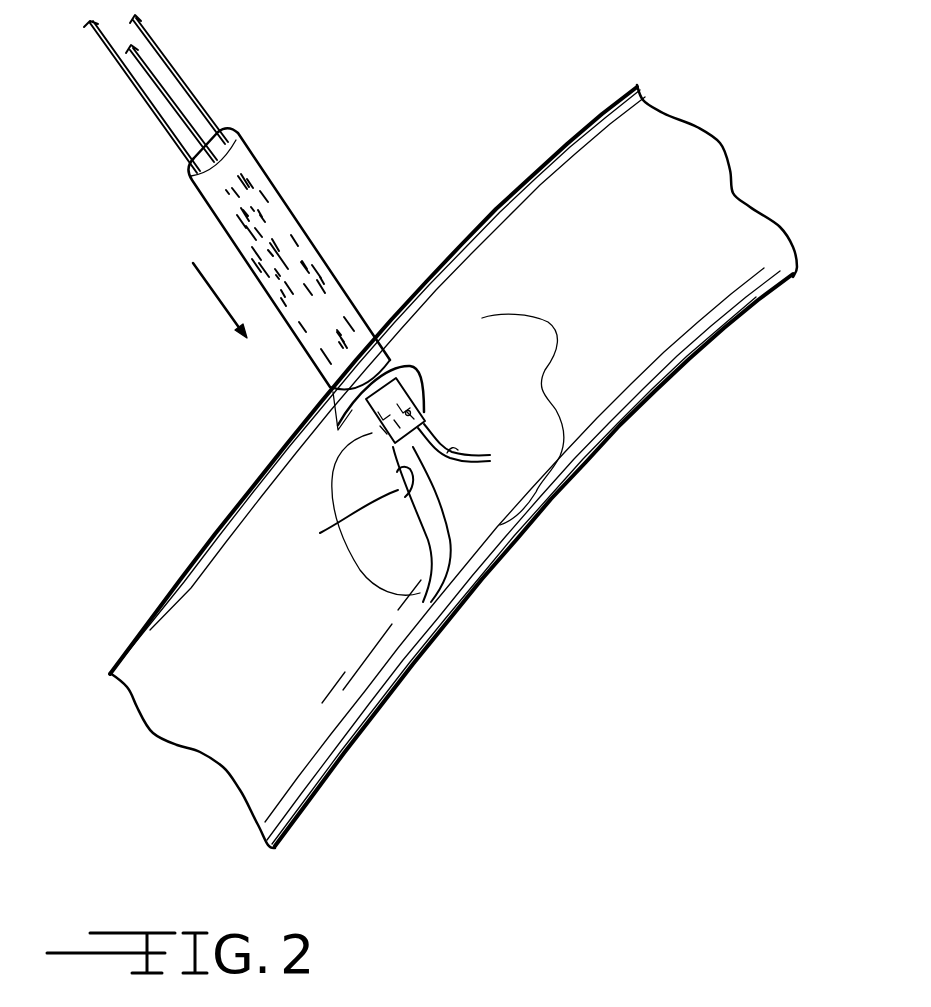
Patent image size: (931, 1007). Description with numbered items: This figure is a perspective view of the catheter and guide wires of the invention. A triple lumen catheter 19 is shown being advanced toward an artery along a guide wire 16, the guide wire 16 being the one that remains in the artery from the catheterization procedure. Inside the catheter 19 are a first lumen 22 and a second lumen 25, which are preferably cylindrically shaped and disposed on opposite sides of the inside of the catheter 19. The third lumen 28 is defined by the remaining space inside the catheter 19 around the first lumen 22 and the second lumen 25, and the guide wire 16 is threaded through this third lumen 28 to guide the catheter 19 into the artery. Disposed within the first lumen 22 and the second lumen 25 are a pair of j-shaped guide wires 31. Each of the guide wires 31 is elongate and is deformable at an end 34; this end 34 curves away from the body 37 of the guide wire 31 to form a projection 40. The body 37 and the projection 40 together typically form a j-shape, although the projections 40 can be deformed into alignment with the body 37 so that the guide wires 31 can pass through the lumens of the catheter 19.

The guide wire 16 is at (462, 529).
The triple lumen catheter 19 is at (287, 197).
The first lumen 22 is at (411, 358).
The second lumen 25 is at (310, 398).
The third lumen 28 is at (478, 464).
The j-shaped guide wires 31 is at (397, 371).
The end 34 is at (433, 410).
The body 37 is at (430, 445).
The projection 40 is at (458, 458).